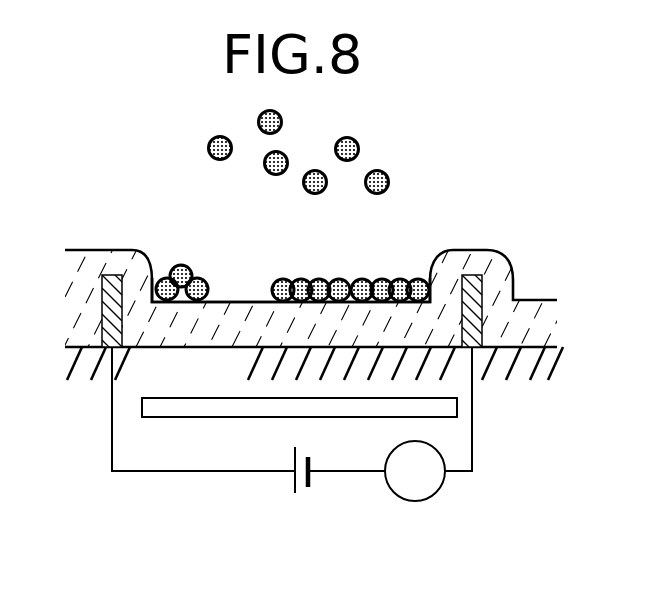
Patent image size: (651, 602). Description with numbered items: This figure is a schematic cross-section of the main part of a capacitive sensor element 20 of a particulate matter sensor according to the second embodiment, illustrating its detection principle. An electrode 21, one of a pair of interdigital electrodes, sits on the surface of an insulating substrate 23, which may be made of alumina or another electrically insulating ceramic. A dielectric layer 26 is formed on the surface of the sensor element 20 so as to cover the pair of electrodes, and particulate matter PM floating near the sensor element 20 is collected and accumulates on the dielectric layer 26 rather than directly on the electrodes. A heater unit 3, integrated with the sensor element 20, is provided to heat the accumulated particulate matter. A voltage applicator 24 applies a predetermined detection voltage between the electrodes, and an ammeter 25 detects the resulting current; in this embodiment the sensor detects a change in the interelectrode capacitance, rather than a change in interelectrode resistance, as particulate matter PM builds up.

The sensor element 20 is at (503, 225).
The electrode 21 is at (108, 287).
The dielectric layer 26 is at (247, 309).
The particulate matter PM is at (381, 277).
The insulating substrate 23 is at (502, 410).
The heater unit 3 is at (155, 405).
The voltage applicator 24 is at (303, 488).
The ammeter 25 is at (427, 480).